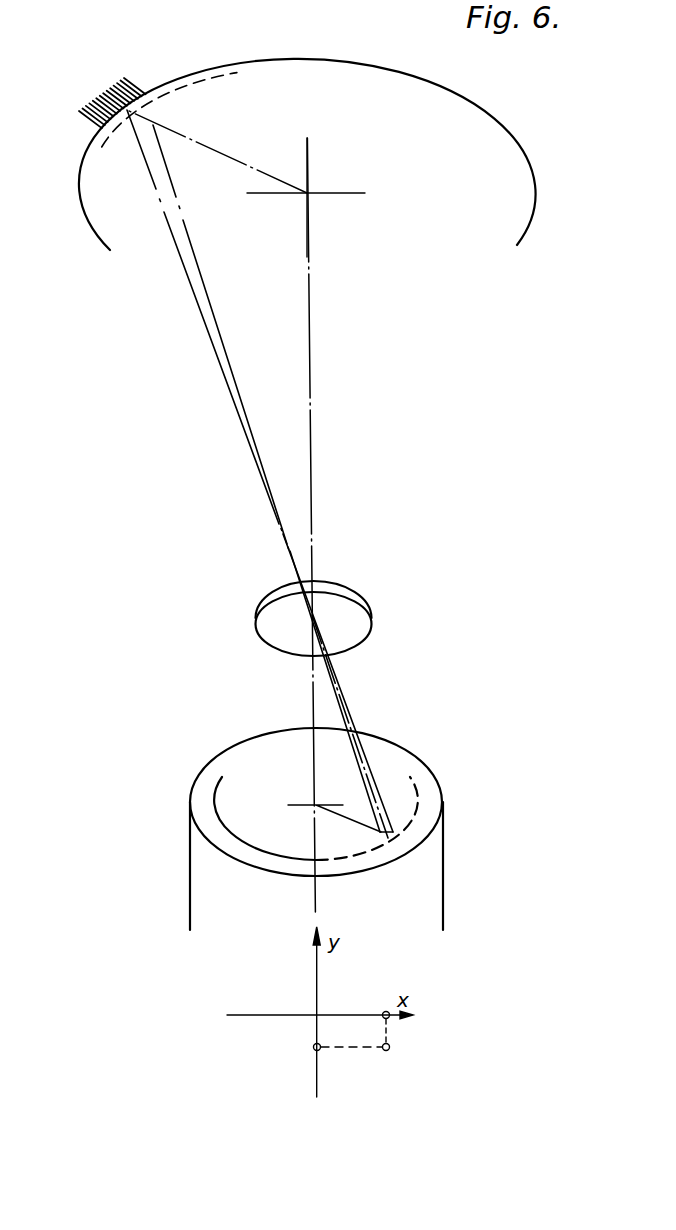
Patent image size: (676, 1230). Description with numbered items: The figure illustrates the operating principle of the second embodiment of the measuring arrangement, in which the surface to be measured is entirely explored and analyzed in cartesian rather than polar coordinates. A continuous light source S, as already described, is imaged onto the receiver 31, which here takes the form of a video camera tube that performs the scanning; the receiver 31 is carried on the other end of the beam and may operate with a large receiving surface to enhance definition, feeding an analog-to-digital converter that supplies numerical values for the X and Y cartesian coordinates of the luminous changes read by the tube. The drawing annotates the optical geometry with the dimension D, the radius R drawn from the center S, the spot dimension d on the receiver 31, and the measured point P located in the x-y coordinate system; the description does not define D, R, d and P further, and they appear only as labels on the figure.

The receiver apparatus 31 is at (197, 780).
The light source of diameter D on the mirror D is at (168, 60).
The radius of curvature of the spherical mirror R is at (217, 151).
The continuous light source S is at (309, 192).
The image spot of diameter d on the sample d is at (380, 832).
The measuring point P in the x-y coordinate system P is at (361, 1041).